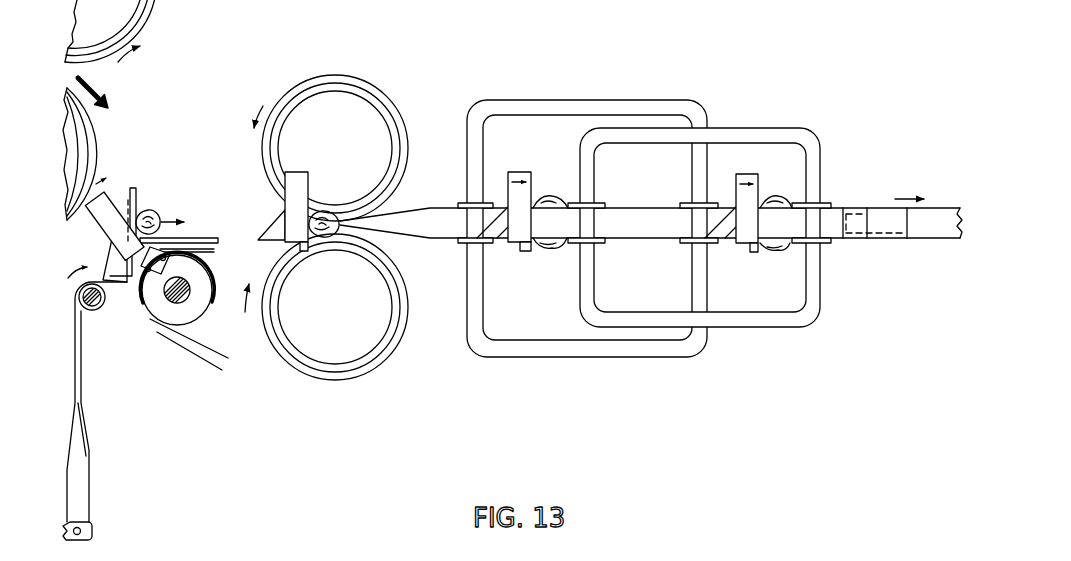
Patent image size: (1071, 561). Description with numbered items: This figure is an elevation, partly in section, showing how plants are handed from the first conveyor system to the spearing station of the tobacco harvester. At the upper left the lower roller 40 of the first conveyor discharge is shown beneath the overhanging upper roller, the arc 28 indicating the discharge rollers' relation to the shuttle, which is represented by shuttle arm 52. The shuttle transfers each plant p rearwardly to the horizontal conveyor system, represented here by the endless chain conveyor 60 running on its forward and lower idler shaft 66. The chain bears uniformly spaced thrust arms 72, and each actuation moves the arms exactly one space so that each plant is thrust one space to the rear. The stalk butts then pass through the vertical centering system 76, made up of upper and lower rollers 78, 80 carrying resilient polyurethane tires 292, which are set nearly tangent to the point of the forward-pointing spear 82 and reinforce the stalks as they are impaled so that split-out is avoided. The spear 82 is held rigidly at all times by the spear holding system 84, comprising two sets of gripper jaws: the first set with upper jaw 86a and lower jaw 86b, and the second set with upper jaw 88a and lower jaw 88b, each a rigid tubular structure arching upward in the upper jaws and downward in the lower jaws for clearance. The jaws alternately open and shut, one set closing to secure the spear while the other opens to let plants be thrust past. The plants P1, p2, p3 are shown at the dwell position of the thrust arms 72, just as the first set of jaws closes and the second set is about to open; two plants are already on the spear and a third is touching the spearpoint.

The disc segment 28 is at (97, 150).
The lower roller 40 is at (78, 148).
The shuttle arm 52 is at (133, 200).
The endless chain conveyor 60 is at (192, 352).
The idler shaft 66 is at (163, 300).
The thrust arm 72 is at (110, 187).
The vertical centering system 76 is at (334, 255).
The upper roller 78 is at (297, 85).
The lower roller 80 is at (298, 370).
The spear 82 is at (428, 208).
The spear holding system 84 is at (644, 223).
The upper jaw 86a is at (558, 100).
The lower jaw 86b is at (490, 357).
The upper jaw 88a is at (750, 128).
The lower jaw 88b is at (760, 327).
The polyurethane tire 292 is at (353, 82).
The plant p is at (163, 213).
The plant P1 is at (340, 203).
The plant p2 is at (546, 246).
The plant p3 is at (770, 246).